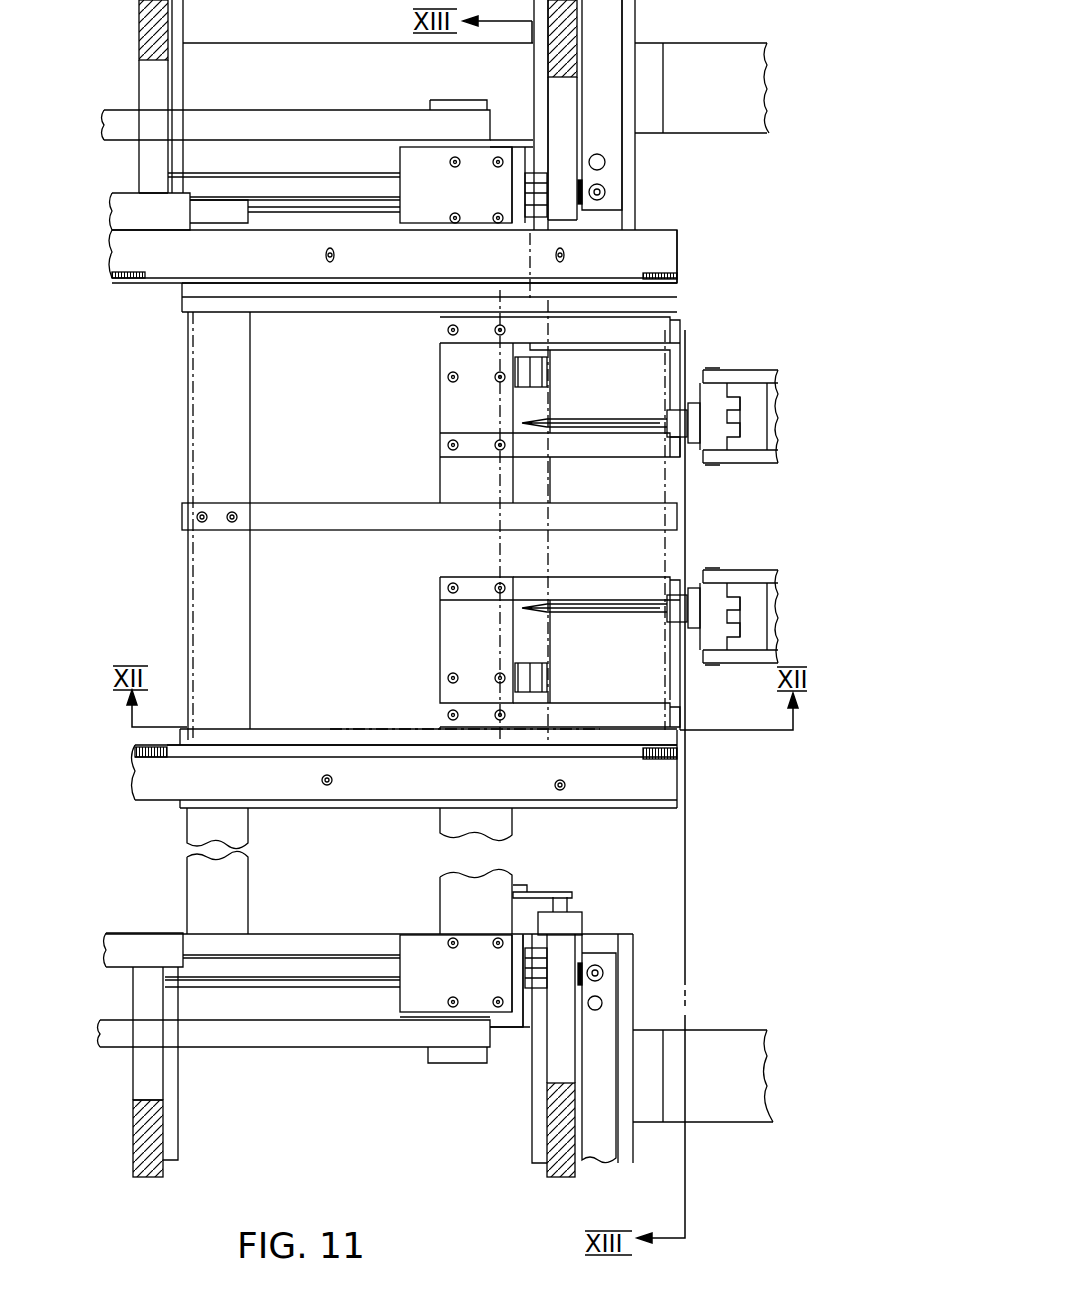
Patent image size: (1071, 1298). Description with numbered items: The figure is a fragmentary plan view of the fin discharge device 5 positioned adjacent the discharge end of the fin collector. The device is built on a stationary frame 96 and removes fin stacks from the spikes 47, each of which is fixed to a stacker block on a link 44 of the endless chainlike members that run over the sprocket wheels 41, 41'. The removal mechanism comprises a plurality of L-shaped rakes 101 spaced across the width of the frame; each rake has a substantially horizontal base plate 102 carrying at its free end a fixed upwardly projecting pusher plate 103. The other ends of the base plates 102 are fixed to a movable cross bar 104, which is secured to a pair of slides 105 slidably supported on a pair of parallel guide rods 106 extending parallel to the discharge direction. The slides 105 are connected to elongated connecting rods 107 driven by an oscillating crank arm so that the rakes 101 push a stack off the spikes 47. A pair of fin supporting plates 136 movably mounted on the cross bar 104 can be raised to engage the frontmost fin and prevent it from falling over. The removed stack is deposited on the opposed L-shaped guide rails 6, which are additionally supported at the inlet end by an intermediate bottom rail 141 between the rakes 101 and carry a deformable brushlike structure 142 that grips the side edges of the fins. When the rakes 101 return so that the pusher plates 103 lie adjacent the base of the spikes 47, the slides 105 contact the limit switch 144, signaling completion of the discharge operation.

The fin discharge device 5 is at (132, 383).
The fin collecting rails 6 is at (655, 245).
The sprocket wheel 41 is at (755, 605).
The sprocket wheel 41' is at (761, 395).
The link 44 is at (744, 427).
The spike 47 is at (635, 425).
The stationary frame 96 is at (213, 455).
The L-shaped rake 101 is at (586, 353).
The horizontal base plate 102 is at (638, 332).
The pusher plate 103 is at (684, 333).
The movable cross bar 104 is at (467, 639).
The slide 105 is at (408, 170).
The guide rod 106 is at (282, 185).
The connecting rod 107 is at (309, 130).
The fin supporting plate 136 is at (527, 390).
The intermediate bottom rail 141 is at (678, 517).
The brushlike structure 142 is at (666, 276).
The limit switch 144 is at (580, 920).